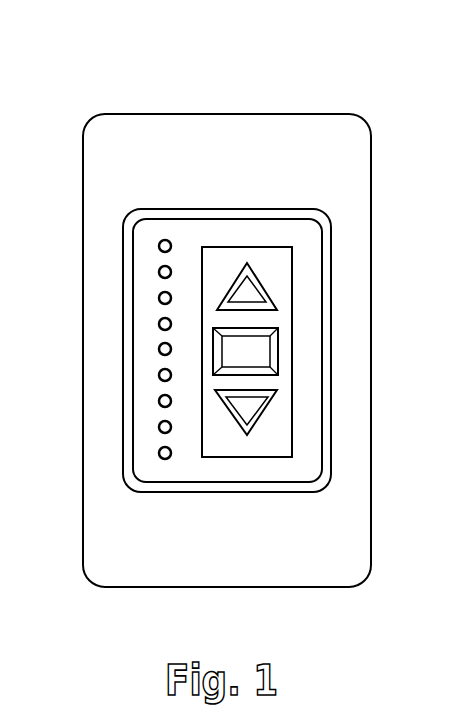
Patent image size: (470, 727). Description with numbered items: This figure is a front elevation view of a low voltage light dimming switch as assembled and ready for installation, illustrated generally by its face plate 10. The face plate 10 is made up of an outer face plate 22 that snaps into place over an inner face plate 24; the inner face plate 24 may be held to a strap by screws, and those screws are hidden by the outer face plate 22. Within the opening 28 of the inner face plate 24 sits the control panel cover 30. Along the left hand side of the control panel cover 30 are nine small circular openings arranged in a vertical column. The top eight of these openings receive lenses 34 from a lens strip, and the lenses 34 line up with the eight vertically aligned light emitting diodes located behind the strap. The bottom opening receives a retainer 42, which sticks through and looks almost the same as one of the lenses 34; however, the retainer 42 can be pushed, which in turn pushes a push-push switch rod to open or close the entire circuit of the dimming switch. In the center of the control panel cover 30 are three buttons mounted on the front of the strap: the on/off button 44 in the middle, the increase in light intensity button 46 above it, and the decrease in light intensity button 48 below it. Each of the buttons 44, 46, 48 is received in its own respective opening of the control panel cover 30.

The face plate 10 is at (378, 104).
The outer face plate 22 is at (240, 176).
The inner face plate 24 is at (265, 209).
The opening 28 is at (321, 403).
The control panel cover 30 is at (320, 375).
The lens 34 is at (158, 298).
The retainer 42 is at (165, 459).
The on/off button 44 is at (265, 348).
The increase in light intensity button 46 is at (258, 285).
The decrease in light intensity button 48 is at (248, 412).